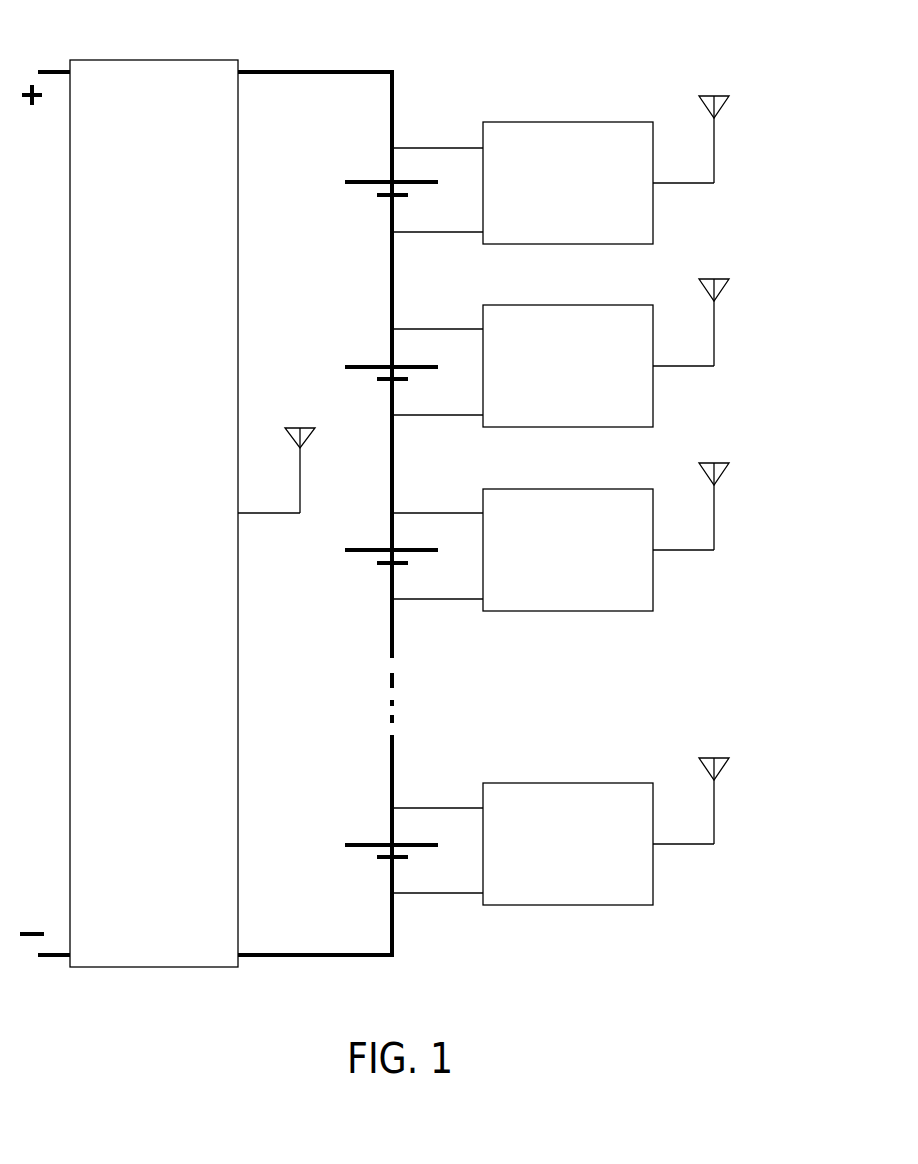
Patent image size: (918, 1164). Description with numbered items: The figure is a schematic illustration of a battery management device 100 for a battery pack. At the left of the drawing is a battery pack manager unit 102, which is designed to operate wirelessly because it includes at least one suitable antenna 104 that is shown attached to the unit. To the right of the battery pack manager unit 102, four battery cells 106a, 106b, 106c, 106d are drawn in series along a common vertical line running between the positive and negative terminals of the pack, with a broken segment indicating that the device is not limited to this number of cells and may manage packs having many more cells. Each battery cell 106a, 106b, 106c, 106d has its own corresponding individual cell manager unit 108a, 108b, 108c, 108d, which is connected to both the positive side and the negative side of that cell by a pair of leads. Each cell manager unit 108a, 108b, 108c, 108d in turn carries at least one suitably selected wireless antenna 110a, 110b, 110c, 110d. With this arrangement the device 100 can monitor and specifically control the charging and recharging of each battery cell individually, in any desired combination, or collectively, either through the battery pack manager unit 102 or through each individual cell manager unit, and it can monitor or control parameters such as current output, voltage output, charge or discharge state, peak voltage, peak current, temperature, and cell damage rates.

The battery management device 100 is at (143, 36).
The battery pack manager unit 102 is at (154, 513).
The antenna 104 is at (300, 448).
The battery cell 106a is at (362, 182).
The battery cell 106b is at (363, 365).
The battery cell 106c is at (367, 552).
The battery cell 106d is at (360, 847).
The cell manager unit 108a is at (522, 183).
The cell manager unit 108b is at (522, 366).
The cell manager unit 108c is at (522, 550).
The cell manager unit 108d is at (522, 844).
The wireless antenna 110a is at (680, 183).
The wireless antenna 110b is at (680, 366).
The wireless antenna 110c is at (680, 550).
The wireless antenna 110d is at (680, 844).